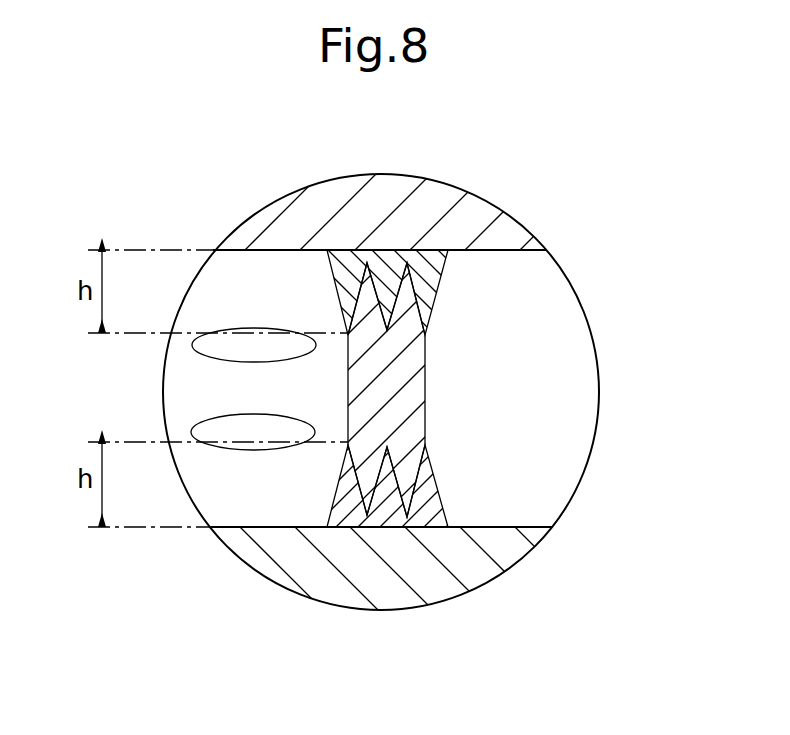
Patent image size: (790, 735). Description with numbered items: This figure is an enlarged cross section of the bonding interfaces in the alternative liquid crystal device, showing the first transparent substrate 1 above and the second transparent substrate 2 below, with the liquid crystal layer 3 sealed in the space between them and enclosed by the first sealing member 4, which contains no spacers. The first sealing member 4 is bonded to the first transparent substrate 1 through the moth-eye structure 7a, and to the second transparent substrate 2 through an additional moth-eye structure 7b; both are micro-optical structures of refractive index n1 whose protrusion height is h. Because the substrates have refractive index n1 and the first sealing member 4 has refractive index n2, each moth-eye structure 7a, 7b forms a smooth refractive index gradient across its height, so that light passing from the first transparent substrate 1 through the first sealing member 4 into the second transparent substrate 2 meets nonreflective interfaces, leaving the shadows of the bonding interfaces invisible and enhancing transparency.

The first transparent substrate 1 is at (507, 237).
The second transparent substrate 2 is at (505, 583).
The liquid crystal layer 3 is at (263, 503).
The first sealing member 4 is at (413, 393).
The moth-eye structure 7a is at (388, 267).
The moth-eye structure 7b is at (377, 505).